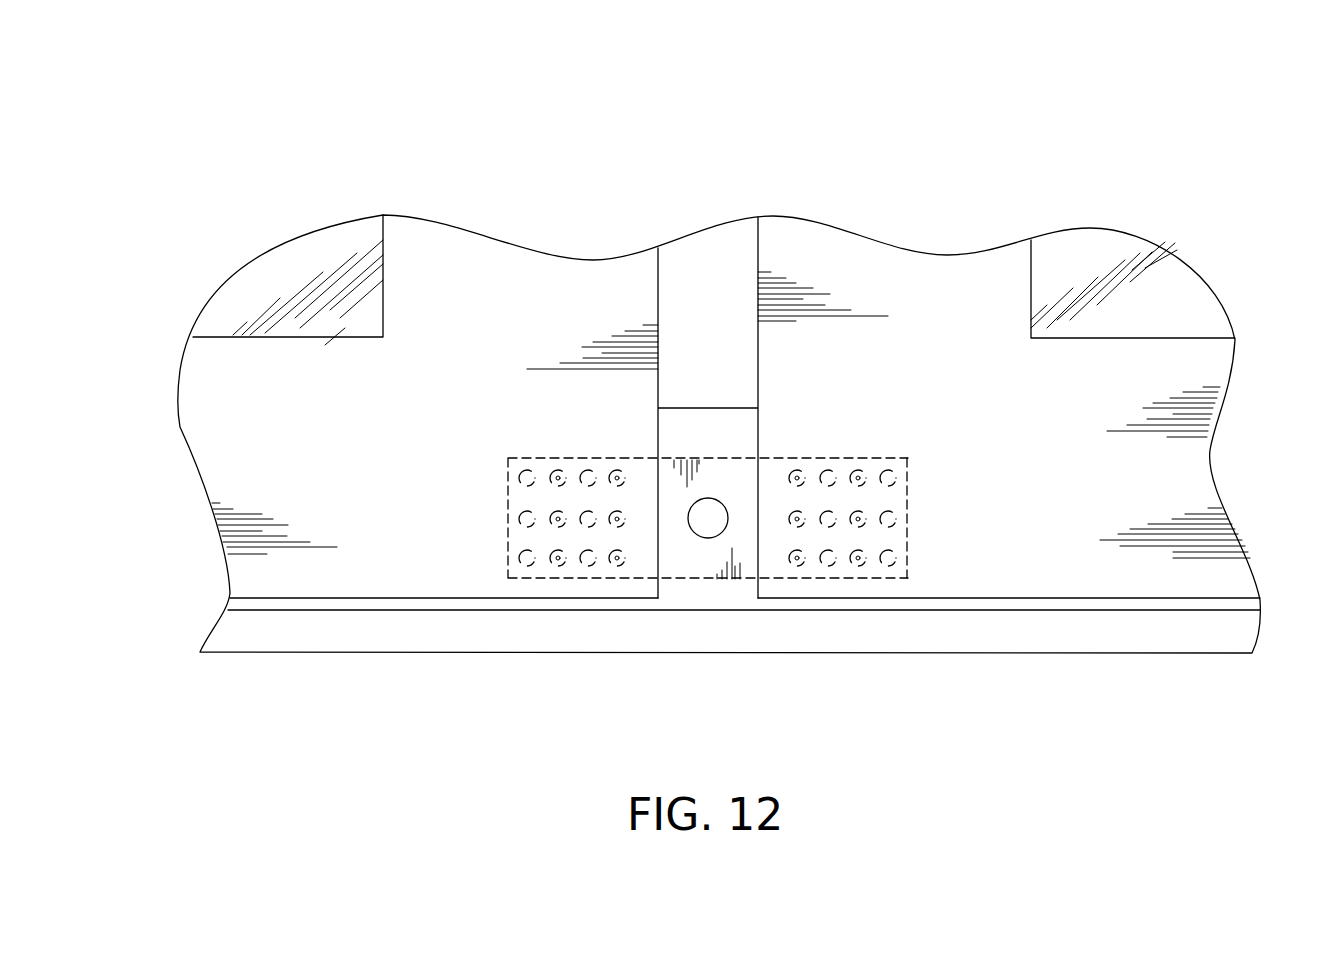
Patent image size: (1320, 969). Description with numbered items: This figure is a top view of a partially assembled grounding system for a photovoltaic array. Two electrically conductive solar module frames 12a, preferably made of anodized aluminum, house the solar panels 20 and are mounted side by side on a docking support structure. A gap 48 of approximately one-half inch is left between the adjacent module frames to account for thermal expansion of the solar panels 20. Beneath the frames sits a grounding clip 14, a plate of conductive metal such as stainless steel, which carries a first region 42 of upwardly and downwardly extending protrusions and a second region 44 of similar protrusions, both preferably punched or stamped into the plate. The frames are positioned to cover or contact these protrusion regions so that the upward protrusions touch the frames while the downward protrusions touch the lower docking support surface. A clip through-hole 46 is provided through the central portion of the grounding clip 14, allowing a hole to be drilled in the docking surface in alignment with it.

The solar module frame 12a is at (255, 413).
The solar panels 20 is at (297, 253).
The gap 48 is at (603, 110).
The first region 42 is at (518, 536).
The second region 44 is at (895, 538).
The grounding clip 14 is at (690, 532).
The clip through-hole 46 is at (703, 566).